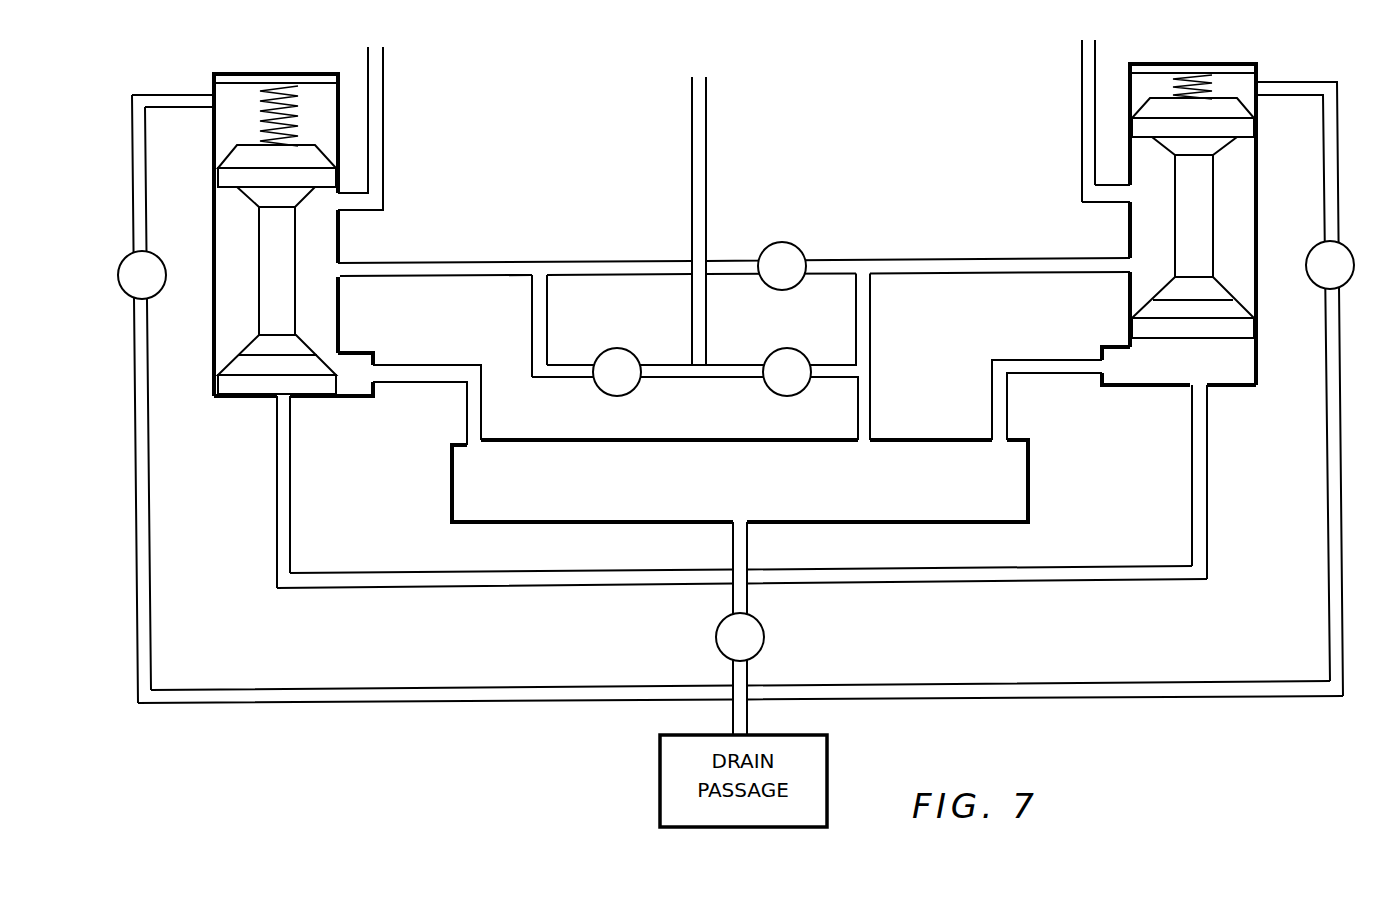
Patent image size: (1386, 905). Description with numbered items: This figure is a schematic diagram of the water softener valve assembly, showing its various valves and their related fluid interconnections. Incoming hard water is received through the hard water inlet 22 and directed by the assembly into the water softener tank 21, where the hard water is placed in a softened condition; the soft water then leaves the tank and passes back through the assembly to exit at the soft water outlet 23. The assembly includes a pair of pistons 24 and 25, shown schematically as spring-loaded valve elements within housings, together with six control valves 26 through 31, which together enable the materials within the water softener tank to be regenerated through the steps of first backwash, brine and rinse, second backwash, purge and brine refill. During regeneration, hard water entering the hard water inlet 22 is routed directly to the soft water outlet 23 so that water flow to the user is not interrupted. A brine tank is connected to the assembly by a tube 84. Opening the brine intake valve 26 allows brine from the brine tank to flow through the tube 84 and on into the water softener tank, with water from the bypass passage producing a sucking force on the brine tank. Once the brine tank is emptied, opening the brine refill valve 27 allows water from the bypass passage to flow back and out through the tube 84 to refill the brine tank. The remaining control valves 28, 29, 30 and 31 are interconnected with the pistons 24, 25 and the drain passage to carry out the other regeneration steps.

The water softener tank 21 is at (1030, 458).
The hard water inlet 22 is at (1082, 83).
The soft water outlet 23 is at (383, 78).
The piston 24 is at (237, 155).
The piston 25 is at (1227, 112).
The brine intake valve 26 is at (776, 394).
The brine refill valve 27 is at (612, 396).
The control valve 28 is at (800, 247).
The control valve 29 is at (1347, 283).
The control valve 30 is at (121, 283).
The control valve 31 is at (716, 637).
The tube 84 is at (708, 125).